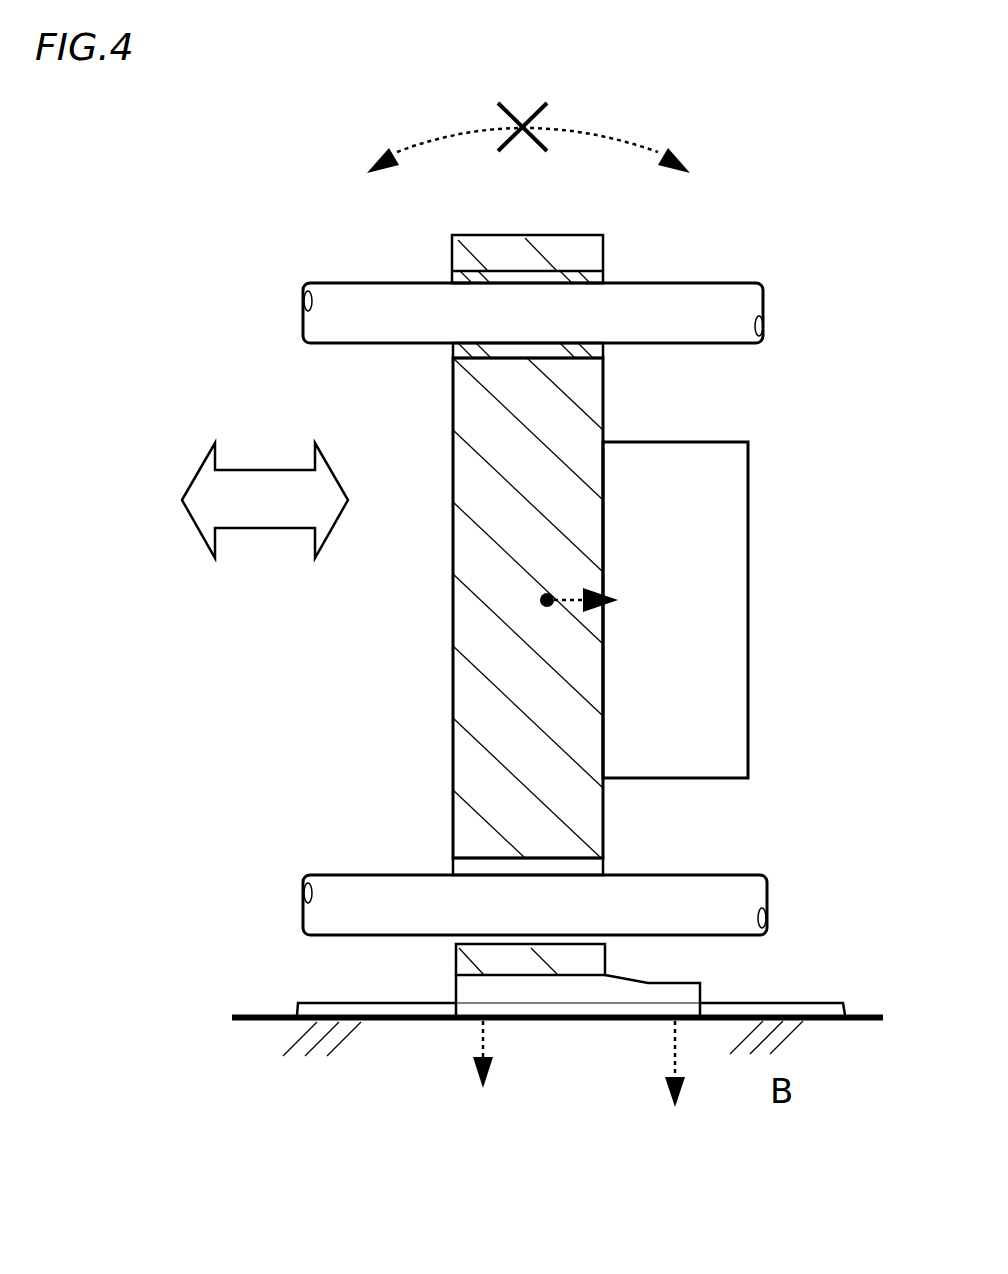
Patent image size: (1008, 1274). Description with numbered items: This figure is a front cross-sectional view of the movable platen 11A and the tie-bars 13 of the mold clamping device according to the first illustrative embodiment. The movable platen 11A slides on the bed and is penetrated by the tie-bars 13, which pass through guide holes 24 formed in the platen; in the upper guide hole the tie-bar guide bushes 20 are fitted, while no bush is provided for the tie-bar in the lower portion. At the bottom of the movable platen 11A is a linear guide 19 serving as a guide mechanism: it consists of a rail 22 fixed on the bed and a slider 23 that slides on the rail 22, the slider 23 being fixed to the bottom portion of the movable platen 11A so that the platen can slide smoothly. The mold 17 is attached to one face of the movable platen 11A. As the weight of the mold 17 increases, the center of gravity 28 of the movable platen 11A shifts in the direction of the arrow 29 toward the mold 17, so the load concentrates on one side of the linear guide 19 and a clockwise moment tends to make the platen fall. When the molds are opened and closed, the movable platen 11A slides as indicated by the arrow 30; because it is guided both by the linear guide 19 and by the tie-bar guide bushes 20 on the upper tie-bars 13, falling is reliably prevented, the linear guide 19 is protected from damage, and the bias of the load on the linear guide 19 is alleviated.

The movable platen 11A is at (453, 683).
The tie-bars 13 is at (760, 285).
The mold 17 is at (718, 537).
The linear guide 19 is at (572, 1005).
The tie-bar guide bushes 20 is at (452, 283).
The rail 22 is at (830, 1003).
The slider 23 is at (455, 993).
The guide holes 24 is at (522, 279).
The center of gravity 28 is at (545, 600).
The arrow 29 is at (595, 615).
The arrow 30 is at (265, 482).